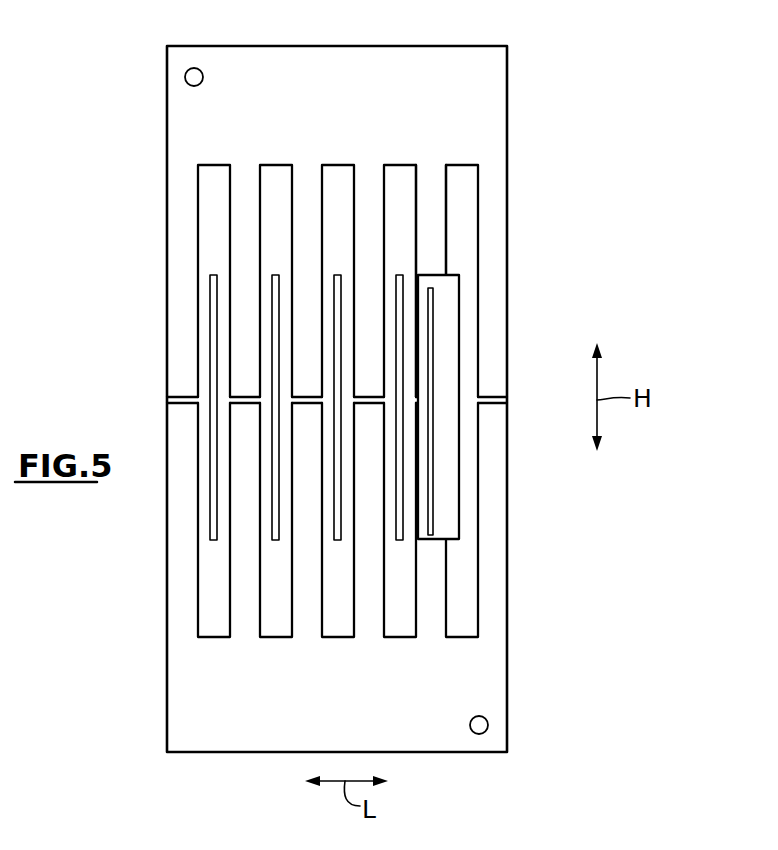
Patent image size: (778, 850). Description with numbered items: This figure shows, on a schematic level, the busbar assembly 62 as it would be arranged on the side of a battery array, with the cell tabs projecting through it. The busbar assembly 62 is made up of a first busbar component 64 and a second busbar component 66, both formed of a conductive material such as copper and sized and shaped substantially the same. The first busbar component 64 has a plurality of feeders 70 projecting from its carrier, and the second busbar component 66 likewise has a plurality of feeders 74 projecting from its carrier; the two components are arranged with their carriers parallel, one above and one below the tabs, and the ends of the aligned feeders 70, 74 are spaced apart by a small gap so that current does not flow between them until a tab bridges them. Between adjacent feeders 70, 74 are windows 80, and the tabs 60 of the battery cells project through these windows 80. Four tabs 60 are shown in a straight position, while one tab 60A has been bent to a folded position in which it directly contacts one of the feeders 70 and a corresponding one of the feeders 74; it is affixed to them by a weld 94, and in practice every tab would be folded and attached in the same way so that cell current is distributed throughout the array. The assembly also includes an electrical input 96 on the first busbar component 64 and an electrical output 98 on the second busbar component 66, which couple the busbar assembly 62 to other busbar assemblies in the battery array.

The tab 60 is at (275, 338).
The folded tab 60A is at (496, 407).
The busbar assembly 62 is at (553, 50).
The first busbar component 64 is at (378, 262).
The second busbar component 66 is at (383, 522).
The feeders 70 is at (433, 228).
The feeders 74 is at (433, 599).
The windows 80 is at (400, 262).
The weld 94 is at (432, 382).
The electrical input 96 is at (191, 66).
The electrical output 98 is at (485, 736).